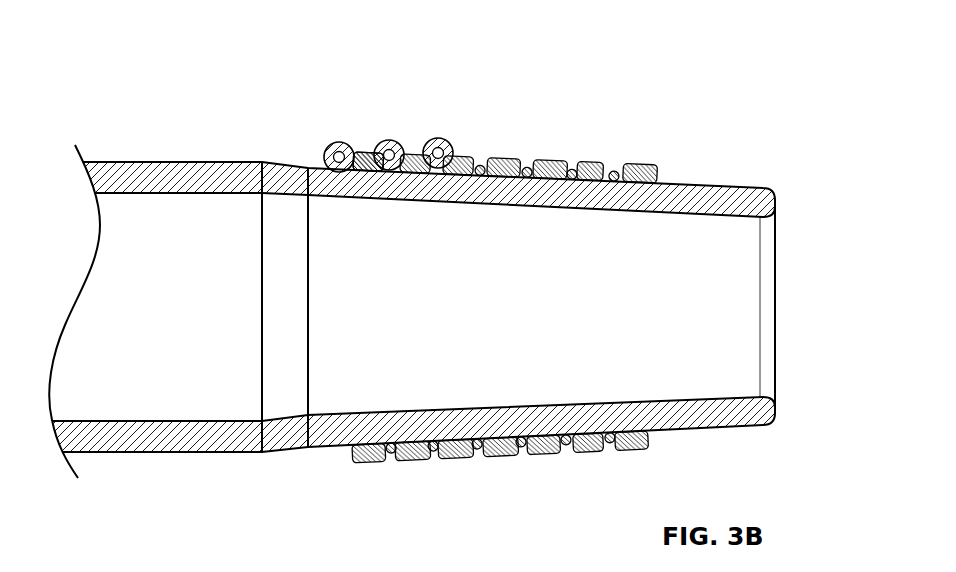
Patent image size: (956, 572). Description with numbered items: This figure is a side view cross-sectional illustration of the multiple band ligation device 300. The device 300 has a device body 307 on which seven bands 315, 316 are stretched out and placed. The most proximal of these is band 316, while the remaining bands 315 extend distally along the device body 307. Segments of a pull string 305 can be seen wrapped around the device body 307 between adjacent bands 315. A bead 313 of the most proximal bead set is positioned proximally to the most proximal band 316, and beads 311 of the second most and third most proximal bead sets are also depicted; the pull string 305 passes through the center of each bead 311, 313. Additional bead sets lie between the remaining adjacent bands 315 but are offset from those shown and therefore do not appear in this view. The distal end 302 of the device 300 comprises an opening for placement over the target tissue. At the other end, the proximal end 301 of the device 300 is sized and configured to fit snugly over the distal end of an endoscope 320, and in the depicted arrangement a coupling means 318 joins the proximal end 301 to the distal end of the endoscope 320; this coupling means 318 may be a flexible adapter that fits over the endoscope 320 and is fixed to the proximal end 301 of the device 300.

The multiple band ligation device 300 is at (160, 43).
The proximal end 301 is at (446, 305).
The distal end 302 is at (748, 323).
The pull string 305 is at (450, 155).
The device body 307 is at (762, 205).
The beads 311 is at (397, 141).
The bead 313 is at (336, 143).
The bands 315 is at (643, 168).
The most proximal band 316 is at (365, 150).
The coupling means 318 is at (272, 208).
The endoscope 320 is at (173, 218).